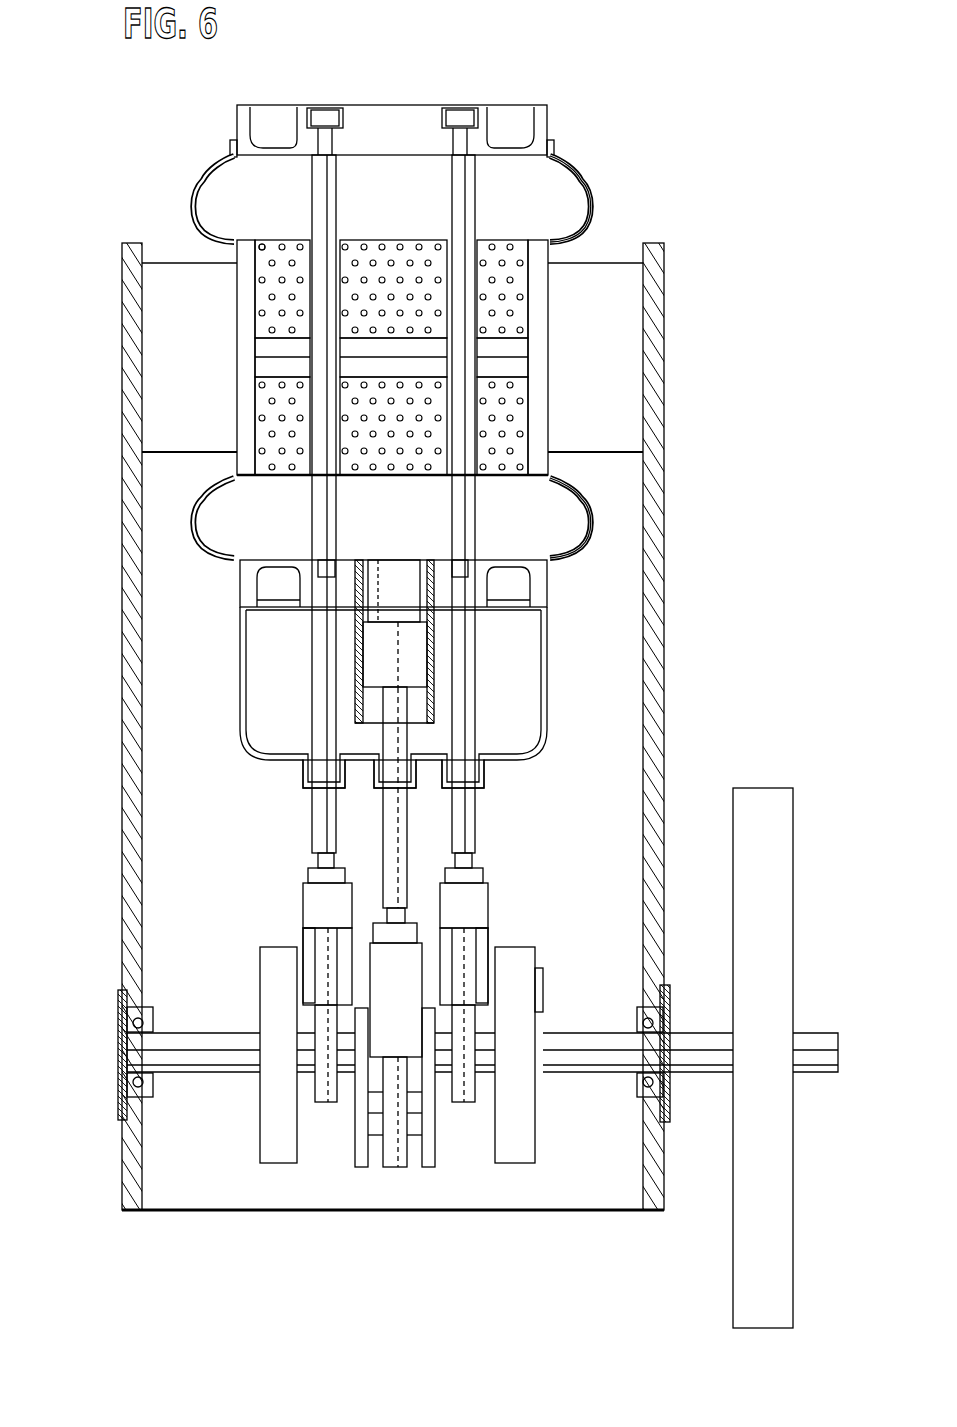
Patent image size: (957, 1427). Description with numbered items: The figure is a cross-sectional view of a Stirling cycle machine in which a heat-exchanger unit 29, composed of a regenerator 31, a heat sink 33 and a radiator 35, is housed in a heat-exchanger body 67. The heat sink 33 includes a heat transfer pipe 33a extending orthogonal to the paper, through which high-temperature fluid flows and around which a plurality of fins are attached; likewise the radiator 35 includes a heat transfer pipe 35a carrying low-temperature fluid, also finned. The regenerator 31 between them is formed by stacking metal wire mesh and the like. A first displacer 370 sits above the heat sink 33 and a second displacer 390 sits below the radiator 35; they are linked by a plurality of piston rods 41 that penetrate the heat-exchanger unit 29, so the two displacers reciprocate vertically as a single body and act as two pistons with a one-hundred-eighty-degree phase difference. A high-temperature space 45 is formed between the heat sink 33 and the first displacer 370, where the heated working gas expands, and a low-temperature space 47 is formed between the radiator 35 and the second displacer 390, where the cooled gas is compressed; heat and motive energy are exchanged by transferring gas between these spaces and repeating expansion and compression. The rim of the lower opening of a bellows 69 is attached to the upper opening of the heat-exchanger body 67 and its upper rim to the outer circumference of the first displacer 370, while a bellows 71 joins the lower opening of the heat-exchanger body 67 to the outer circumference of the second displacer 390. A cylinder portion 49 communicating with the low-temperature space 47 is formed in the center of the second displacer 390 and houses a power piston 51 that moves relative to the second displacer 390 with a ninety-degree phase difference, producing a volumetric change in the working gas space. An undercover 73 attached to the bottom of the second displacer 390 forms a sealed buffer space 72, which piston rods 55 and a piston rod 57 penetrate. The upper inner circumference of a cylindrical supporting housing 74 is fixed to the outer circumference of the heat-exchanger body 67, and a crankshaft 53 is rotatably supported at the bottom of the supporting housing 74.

The heat-exchanger unit 29 is at (280, 317).
The regenerator 31 is at (257, 365).
The heat sink 33 is at (257, 295).
The heat transfer pipe 33a is at (262, 246).
The radiator 35 is at (257, 424).
The heat transfer pipe 35a is at (282, 478).
The piston rods 41 is at (330, 187).
The high-temperature space 45 is at (577, 196).
The low-temperature space 47 is at (538, 531).
The cylinder portion 49 is at (433, 707).
The power piston 51 is at (392, 633).
The crankshaft 53 is at (205, 1042).
The piston rods 55 is at (322, 655).
The piston rod 57 is at (400, 820).
The heat-exchanger body 67 is at (634, 370).
The bellows 69 is at (585, 169).
The bellows 71 is at (587, 494).
The buffer space 72 is at (253, 722).
The undercover 73 is at (498, 762).
The supporting housing 74 is at (654, 592).
The first displacer 370 is at (377, 105).
The second displacer 390 is at (245, 590).